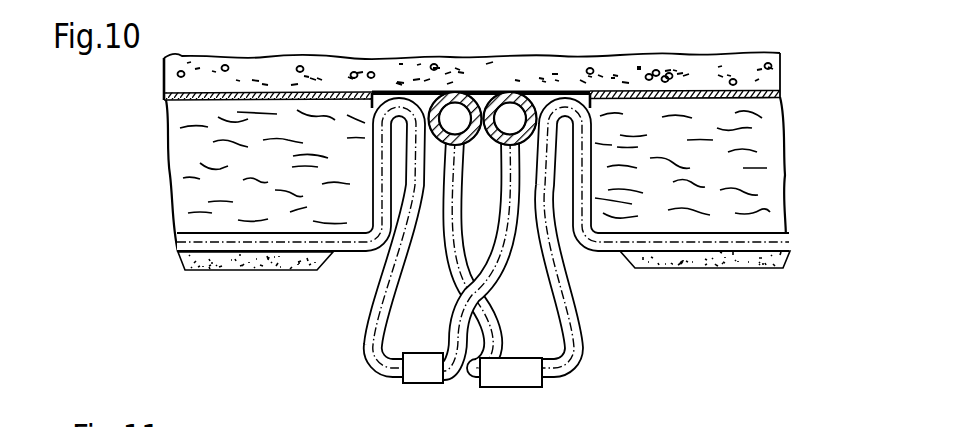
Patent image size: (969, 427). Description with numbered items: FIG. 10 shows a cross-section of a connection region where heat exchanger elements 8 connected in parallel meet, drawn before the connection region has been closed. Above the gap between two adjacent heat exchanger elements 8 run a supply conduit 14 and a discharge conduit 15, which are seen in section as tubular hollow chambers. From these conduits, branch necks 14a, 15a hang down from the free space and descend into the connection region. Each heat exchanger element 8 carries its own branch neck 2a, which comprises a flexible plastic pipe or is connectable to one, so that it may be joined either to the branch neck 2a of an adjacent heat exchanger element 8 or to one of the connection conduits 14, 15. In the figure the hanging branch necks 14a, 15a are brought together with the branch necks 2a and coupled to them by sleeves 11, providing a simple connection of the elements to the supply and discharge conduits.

The heat exchanger element 8 is at (248, 280).
The branch neck 2a is at (365, 365).
The discharge conduit 15 is at (462, 95).
The supply conduit 14 is at (523, 93).
The branch neck of discharge conduit 15a is at (450, 288).
The branch neck of supply conduit 14a is at (502, 294).
The sleeve 11 is at (427, 378).